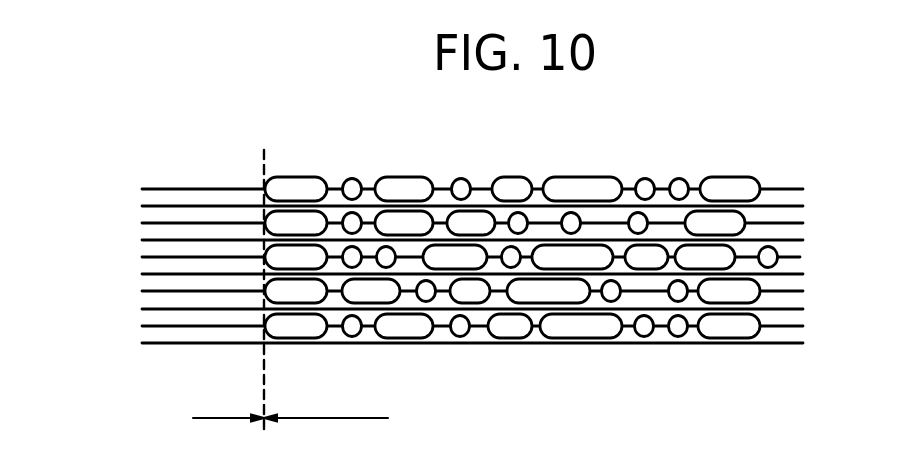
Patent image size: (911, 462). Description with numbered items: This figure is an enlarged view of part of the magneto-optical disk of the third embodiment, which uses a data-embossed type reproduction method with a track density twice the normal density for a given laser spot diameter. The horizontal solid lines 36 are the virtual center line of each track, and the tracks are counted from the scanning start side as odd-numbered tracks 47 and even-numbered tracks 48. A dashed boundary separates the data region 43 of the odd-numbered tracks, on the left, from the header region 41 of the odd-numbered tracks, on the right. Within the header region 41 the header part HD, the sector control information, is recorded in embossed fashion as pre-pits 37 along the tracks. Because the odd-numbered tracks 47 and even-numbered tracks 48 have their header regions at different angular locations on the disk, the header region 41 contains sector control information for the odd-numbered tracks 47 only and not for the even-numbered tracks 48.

The horizontal solid lines 36 is at (363, 345).
The pre-pits 37 is at (407, 177).
The header region 41 is at (346, 418).
The data region 43 is at (208, 418).
The odd-numbered tracks 47 is at (803, 189).
The even-numbered tracks 48 is at (803, 206).